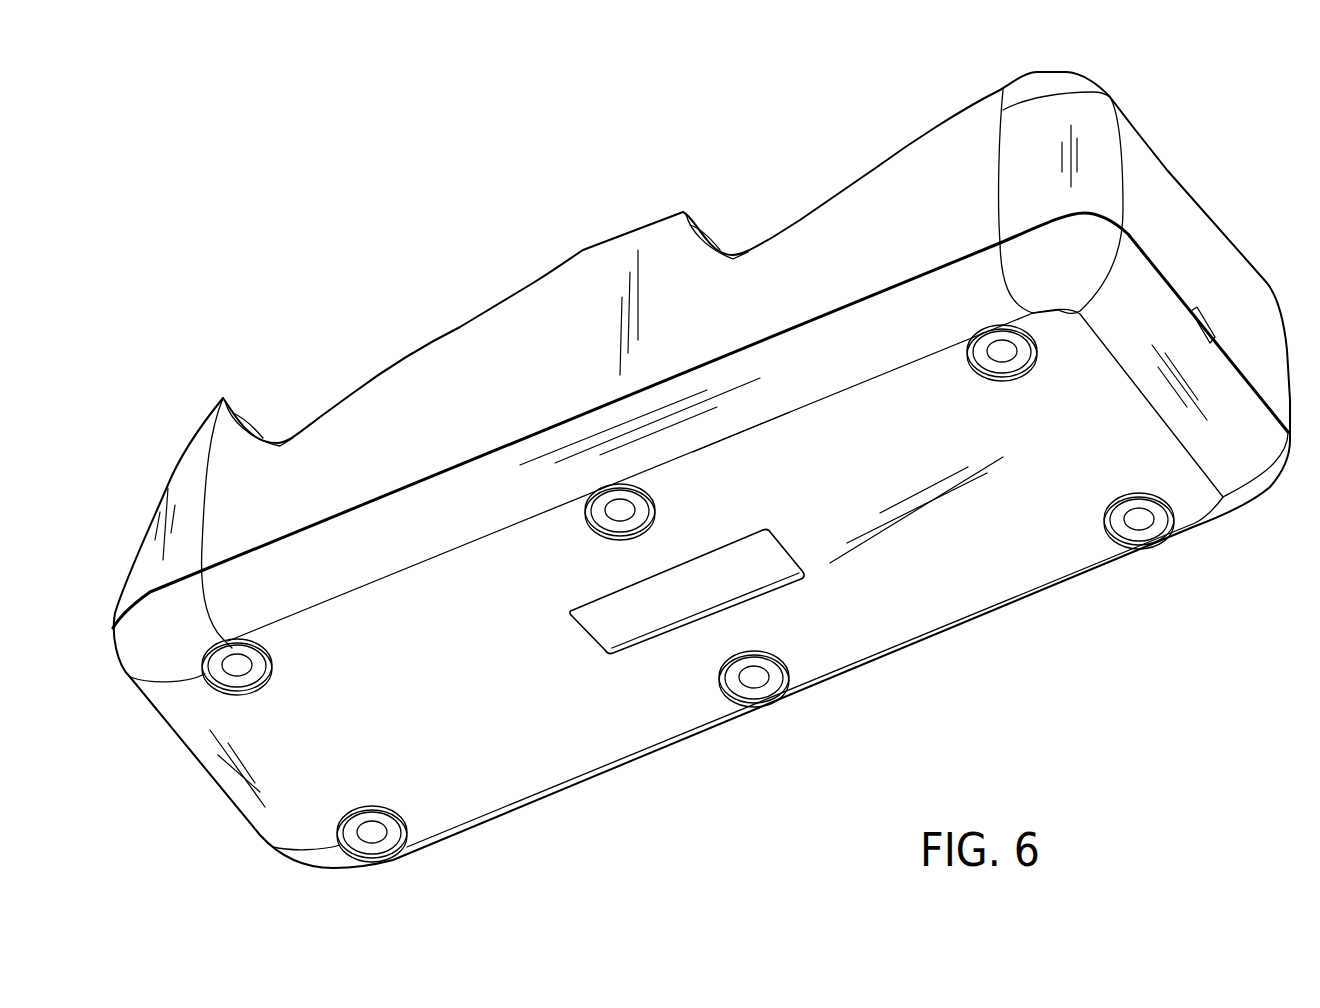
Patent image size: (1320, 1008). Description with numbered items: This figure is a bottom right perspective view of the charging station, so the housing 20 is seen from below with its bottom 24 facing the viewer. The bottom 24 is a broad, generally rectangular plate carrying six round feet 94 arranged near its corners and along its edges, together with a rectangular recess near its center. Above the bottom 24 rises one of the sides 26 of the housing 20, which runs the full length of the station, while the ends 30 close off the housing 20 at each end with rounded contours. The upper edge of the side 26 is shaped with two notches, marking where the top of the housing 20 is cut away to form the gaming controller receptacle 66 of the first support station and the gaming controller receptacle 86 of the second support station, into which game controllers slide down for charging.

The housing 20 is at (187, 460).
The bottom 24 is at (532, 722).
The sides 26 is at (590, 300).
The ends 30 is at (1163, 190).
The gaming controller receptacle 66 is at (425, 347).
The gaming controller receptacle 86 is at (875, 167).
The foot pad 94 is at (1145, 528).